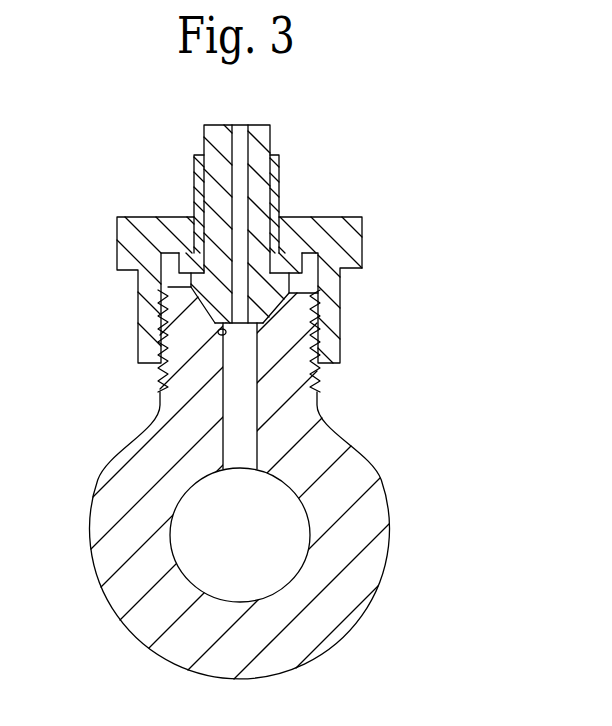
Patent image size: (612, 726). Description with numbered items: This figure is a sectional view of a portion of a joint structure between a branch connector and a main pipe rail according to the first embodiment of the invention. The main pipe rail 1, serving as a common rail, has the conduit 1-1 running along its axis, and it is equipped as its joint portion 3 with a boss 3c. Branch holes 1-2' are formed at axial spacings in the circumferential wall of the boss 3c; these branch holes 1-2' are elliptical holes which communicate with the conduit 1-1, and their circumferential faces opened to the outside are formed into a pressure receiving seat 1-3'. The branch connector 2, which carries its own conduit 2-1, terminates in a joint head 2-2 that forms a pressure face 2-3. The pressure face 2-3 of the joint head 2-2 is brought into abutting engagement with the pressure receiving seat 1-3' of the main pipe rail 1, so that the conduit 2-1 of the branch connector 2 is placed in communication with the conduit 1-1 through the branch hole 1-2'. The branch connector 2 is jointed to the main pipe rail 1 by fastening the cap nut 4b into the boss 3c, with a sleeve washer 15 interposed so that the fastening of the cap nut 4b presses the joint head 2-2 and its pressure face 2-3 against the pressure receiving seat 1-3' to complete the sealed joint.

The main pipe rail 1 is at (376, 506).
The conduit 1-1 is at (307, 543).
The branch hole 1-2' is at (224, 439).
The pressure receiving seat 1-3' is at (139, 370).
The branch connector 2 is at (272, 140).
The conduit of the branch connector 2-1 is at (243, 126).
The joint head 2-2 is at (191, 287).
The pressure face 2-3 is at (316, 292).
The joint portion 3 is at (345, 386).
The boss 3c is at (300, 358).
The cap nut 4b is at (358, 240).
The sleeve washer 15 is at (279, 180).